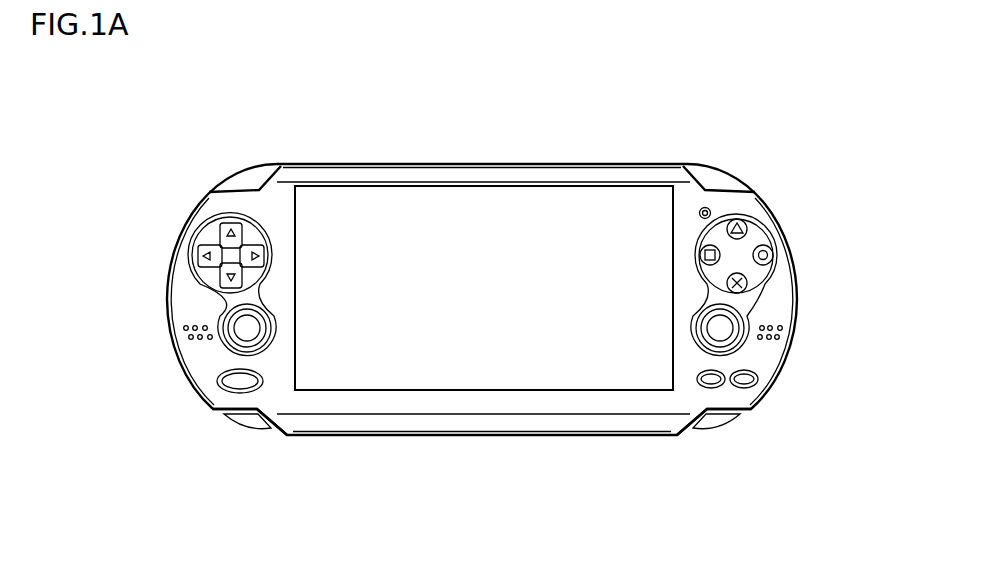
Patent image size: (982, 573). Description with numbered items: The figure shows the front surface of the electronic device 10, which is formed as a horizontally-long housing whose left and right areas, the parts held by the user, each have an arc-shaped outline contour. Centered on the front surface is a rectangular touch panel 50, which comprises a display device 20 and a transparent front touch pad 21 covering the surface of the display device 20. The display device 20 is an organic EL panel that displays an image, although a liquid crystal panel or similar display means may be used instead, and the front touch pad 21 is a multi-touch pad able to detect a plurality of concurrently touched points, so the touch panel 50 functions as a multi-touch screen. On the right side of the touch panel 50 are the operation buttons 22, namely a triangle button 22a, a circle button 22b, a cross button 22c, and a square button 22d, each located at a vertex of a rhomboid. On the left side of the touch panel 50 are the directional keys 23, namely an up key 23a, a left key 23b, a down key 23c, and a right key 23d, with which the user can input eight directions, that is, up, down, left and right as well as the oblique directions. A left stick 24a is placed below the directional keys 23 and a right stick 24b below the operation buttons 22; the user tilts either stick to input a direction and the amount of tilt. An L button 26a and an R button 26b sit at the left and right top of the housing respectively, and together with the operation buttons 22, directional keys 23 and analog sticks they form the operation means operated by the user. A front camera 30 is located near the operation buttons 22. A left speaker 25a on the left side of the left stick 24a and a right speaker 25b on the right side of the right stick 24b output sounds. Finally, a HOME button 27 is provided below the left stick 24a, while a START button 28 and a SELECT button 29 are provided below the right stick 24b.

The electronic device 10 is at (498, 565).
The display device 20 is at (480, 200).
The front touch pad 21 is at (484, 288).
The touch panel 50 is at (543, 121).
The operation buttons 22 is at (802, 273).
The triangle button 22a is at (748, 228).
The circle button 22b is at (772, 254).
The cross button 22c is at (794, 295).
The square button 22d is at (718, 258).
The directional keys 23 is at (168, 274).
The up key 23a is at (214, 231).
The left key 23b is at (208, 256).
The down key 23c is at (255, 258).
The right key 23d is at (218, 272).
The left stick 24a is at (245, 335).
The right stick 24b is at (736, 338).
The left speaker 25a is at (183, 333).
The right speaker 25b is at (782, 334).
The L button 26a is at (245, 178).
The R button 26b is at (722, 176).
The HOME button 27 is at (232, 383).
The START button 28 is at (756, 380).
The SELECT button 29 is at (712, 386).
The front camera 30 is at (703, 208).